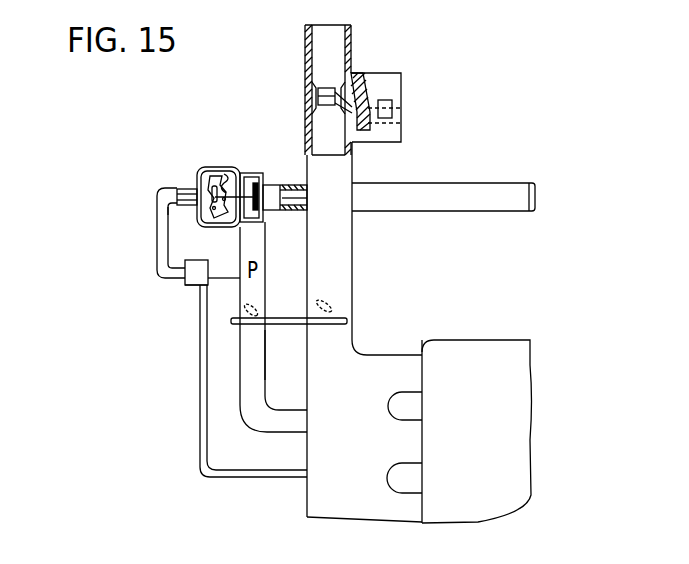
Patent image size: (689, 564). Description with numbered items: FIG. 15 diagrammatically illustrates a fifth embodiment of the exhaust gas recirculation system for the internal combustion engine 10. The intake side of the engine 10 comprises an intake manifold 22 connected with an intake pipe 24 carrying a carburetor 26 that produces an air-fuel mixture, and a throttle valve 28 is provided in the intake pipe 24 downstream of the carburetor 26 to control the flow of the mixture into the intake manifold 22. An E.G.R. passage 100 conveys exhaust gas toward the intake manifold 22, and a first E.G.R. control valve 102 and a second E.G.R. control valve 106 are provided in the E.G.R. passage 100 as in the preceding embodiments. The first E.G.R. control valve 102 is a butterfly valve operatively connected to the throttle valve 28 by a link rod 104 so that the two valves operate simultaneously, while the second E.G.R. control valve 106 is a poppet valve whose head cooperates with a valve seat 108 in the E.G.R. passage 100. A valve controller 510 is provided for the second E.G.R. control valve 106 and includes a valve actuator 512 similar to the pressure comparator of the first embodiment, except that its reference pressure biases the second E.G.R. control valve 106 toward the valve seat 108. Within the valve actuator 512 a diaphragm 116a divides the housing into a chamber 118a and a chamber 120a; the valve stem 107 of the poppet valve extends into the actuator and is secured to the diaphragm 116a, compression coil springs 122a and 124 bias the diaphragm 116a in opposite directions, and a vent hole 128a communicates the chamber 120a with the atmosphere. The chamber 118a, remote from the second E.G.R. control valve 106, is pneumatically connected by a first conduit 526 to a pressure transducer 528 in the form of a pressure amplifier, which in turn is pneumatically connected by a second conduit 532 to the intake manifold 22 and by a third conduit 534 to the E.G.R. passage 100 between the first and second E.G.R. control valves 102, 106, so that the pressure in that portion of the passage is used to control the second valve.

The valve controller 510 is at (152, 133).
The valve actuator 512 is at (198, 165).
The chamber 118a is at (198, 180).
The chamber 120a is at (226, 168).
The vent hole 128a is at (236, 172).
The valve stem 107 is at (251, 172).
The second E.G.R. control valve 106 is at (268, 185).
The valve seat 108 is at (298, 203).
The compression coil spring 124 is at (228, 223).
The compression coil spring 122a is at (170, 222).
The first conduit 526 is at (160, 233).
The diaphragm 116a is at (223, 227).
The pressure transducer 528 is at (185, 285).
The third conduit 534 is at (223, 280).
The second conduit 532 is at (202, 392).
The first E.G.R. control valve 102 is at (260, 306).
The link rod 104 is at (287, 325).
The throttle valve 28 is at (338, 305).
The intake pipe 24 is at (340, 240).
The carburetor 26 is at (370, 74).
The E.G.R. passage 100 is at (461, 192).
The intake manifold 22 is at (368, 370).
The internal combustion engine 10 is at (458, 341).